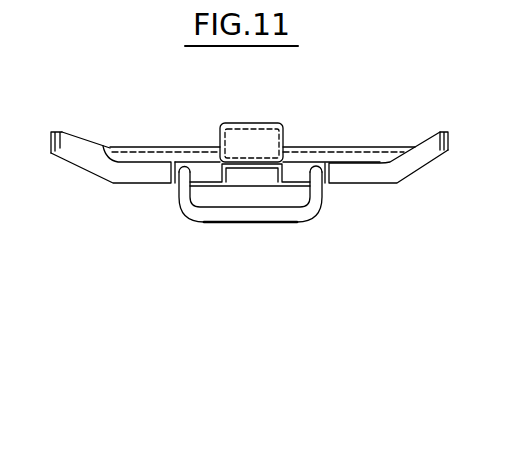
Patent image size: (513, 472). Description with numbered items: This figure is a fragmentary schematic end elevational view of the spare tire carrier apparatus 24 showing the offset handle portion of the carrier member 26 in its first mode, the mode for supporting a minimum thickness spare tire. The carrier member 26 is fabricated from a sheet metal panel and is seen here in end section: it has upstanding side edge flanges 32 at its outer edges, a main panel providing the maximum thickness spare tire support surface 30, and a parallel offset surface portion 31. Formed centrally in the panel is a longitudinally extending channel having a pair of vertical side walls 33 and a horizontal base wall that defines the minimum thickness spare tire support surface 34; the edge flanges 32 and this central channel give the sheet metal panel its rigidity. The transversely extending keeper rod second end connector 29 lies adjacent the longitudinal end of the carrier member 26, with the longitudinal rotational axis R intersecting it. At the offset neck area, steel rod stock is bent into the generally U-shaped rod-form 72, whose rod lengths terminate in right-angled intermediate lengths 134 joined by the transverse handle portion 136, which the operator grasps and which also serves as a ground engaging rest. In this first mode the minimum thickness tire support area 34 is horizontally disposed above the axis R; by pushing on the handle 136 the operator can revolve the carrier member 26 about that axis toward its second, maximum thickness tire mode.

The spare tire carrier apparatus 24 is at (361, 118).
The carrier member 26 is at (92, 143).
The keeper rod second end connector 29 is at (202, 172).
The maximum thickness spare tire support surface 30 is at (372, 153).
The parallel offset surface portion 31 is at (212, 190).
The side edge flanges 32 is at (50, 132).
The vertical side walls 33 is at (286, 180).
The minimum thickness spare tire support surface 34 is at (246, 124).
The U-shaped rod-form 72 is at (297, 224).
The right-angled intermediate lengths 134 is at (185, 193).
The transverse handle portion 136 is at (243, 225).